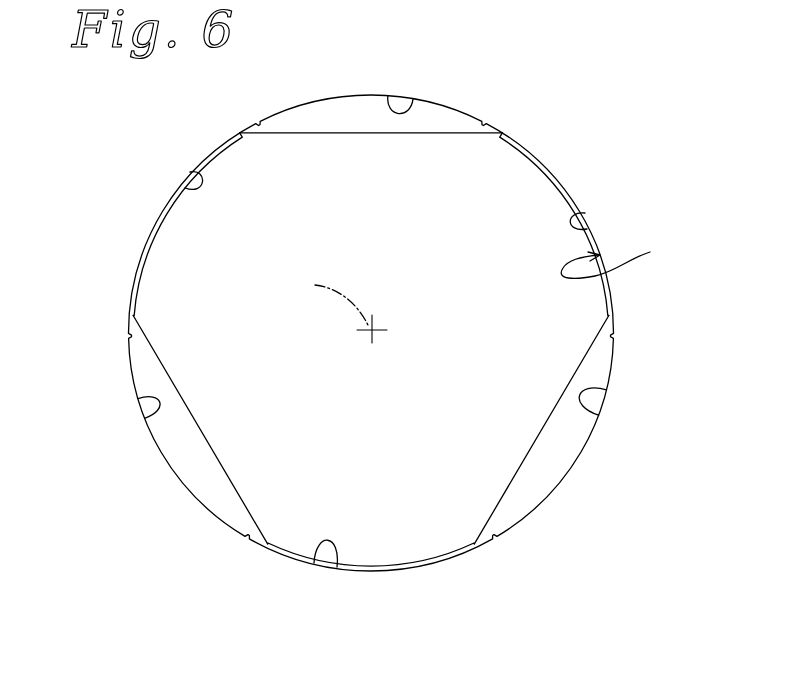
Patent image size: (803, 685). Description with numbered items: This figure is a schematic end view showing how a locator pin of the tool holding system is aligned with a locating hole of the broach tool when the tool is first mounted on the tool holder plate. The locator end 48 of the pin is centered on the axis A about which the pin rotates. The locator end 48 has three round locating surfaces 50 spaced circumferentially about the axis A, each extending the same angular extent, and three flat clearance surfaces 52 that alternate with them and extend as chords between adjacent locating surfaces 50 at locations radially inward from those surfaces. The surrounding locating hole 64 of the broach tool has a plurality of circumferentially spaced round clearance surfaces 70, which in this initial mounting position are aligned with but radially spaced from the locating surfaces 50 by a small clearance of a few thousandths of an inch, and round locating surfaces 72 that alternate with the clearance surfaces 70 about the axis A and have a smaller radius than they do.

The locator end 48 is at (485, 175).
The round locating surfaces 50 is at (560, 167).
The clearance surfaces 52 is at (358, 133).
The locating hole 64 is at (623, 255).
The round clearance surfaces 70 is at (185, 182).
The round locating surfaces 72 is at (410, 97).
The axis A is at (332, 299).